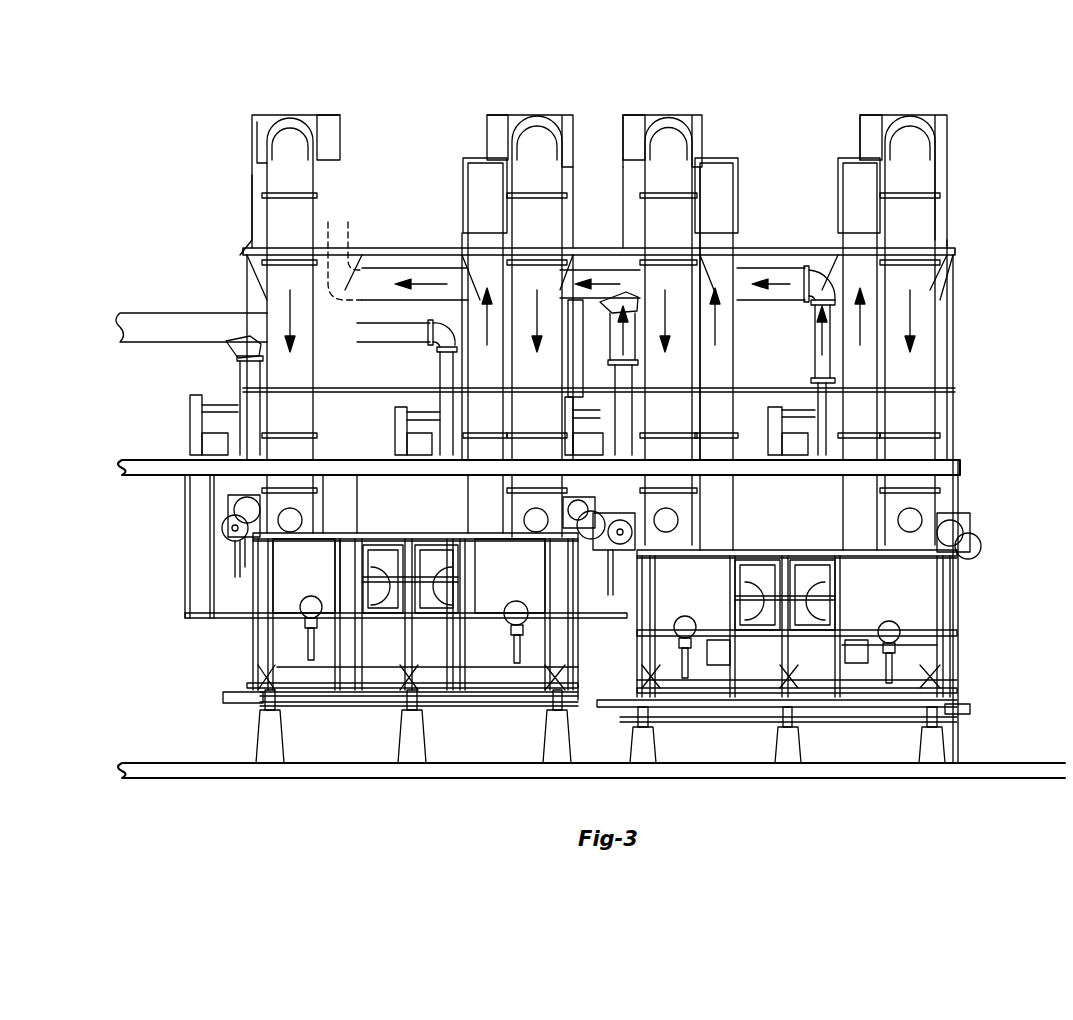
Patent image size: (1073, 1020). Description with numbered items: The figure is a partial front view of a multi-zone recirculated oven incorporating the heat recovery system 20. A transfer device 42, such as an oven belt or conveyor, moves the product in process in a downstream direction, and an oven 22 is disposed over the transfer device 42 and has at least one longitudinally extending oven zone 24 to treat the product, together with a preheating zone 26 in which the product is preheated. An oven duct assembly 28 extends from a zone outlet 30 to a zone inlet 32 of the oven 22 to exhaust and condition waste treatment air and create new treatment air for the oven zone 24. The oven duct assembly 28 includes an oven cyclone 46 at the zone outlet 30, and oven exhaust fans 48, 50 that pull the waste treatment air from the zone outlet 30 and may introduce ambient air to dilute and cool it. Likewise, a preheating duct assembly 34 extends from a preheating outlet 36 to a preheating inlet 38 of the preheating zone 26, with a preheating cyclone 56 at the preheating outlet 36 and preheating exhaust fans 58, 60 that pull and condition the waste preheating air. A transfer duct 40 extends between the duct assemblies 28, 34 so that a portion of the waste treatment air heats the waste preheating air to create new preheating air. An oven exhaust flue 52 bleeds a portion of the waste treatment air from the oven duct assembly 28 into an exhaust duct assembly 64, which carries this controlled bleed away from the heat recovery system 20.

The heat recovery system 20 is at (1000, 122).
The oven 22 is at (232, 657).
The oven zone 24 is at (513, 598).
The preheating zone 26 is at (292, 590).
The oven duct assembly 28 is at (463, 142).
The zone outlet 30 is at (470, 545).
The zone inlet 32 is at (540, 540).
The preheating duct assembly 34 is at (342, 110).
The preheating outlet 36 is at (345, 545).
The preheating inlet 38 is at (290, 537).
The transfer duct 40 is at (412, 268).
The transfer device 42 is at (223, 697).
The oven cyclone 46 is at (633, 219).
The oven exhaust fan 48 is at (497, 125).
The oven exhaust fan 50 is at (536, 520).
The oven exhaust flue 52 is at (240, 365).
The preheating cyclone 56 is at (257, 210).
The preheating exhaust fan 58 is at (327, 125).
The preheating exhaust fan 60 is at (292, 520).
The exhaust duct assembly 64 is at (157, 313).